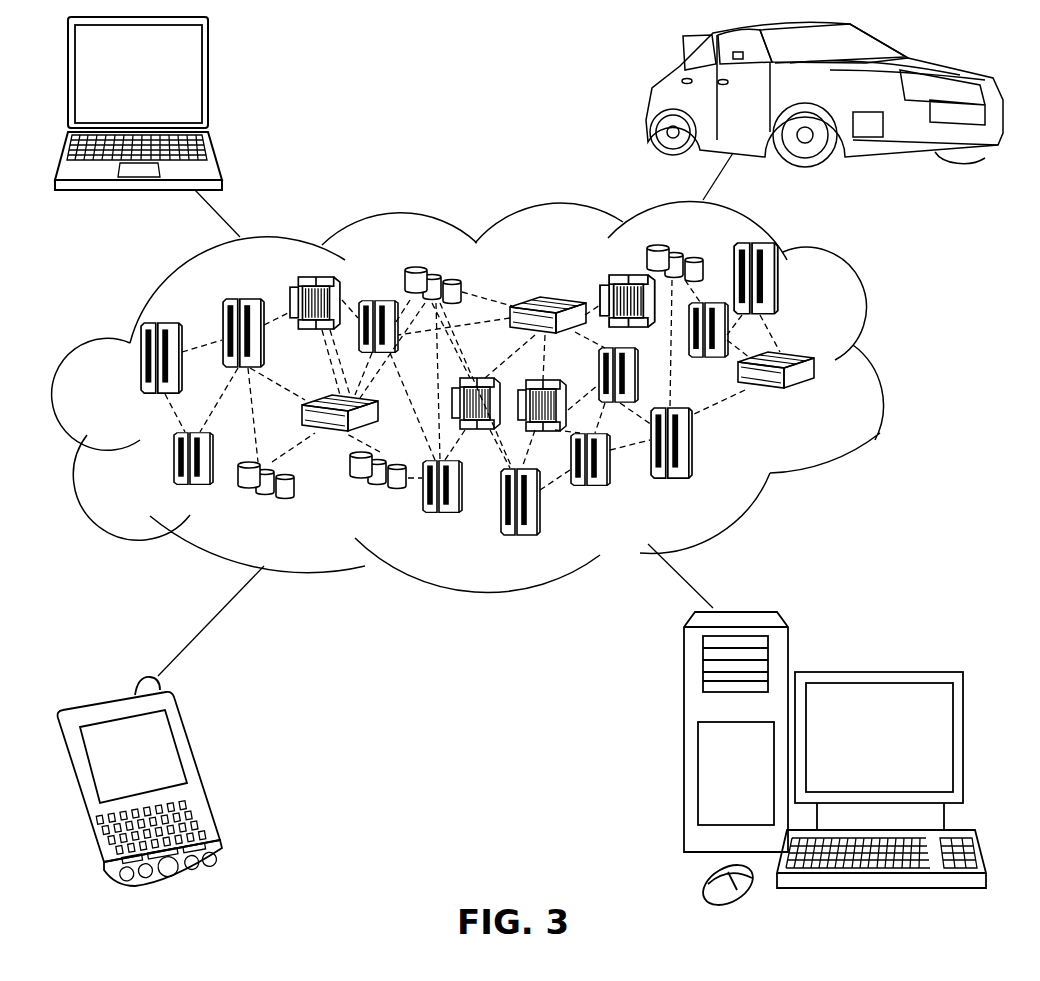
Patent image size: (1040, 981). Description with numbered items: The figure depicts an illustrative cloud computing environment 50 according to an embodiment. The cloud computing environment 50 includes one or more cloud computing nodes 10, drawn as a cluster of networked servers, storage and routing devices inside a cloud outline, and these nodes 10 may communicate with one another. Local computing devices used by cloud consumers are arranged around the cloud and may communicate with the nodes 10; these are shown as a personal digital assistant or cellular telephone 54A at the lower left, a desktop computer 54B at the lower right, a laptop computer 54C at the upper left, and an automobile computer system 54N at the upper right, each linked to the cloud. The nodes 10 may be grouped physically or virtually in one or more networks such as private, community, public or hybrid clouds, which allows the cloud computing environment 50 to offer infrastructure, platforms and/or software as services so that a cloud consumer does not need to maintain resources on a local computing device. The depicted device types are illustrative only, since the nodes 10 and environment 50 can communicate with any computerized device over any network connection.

The cloud computing environment 50 is at (876, 373).
The cloud computing node 10 is at (826, 403).
The personal digital assistant (PDA) or cellular telephone 54A is at (198, 769).
The desktop computer 54B is at (877, 670).
The laptop computer 54C is at (208, 81).
The automobile computer system 54N is at (653, 100).